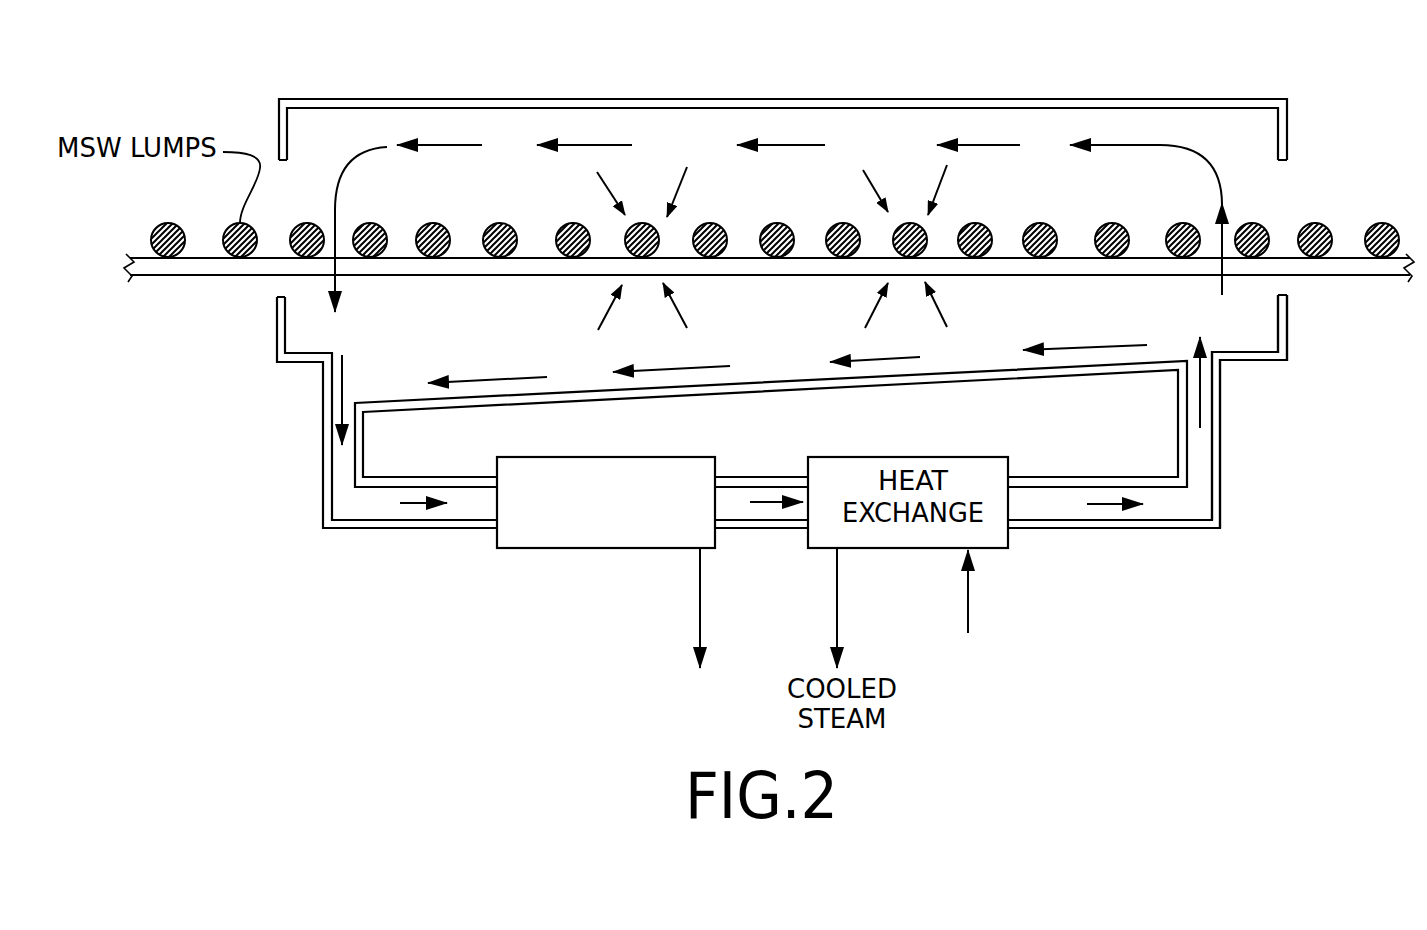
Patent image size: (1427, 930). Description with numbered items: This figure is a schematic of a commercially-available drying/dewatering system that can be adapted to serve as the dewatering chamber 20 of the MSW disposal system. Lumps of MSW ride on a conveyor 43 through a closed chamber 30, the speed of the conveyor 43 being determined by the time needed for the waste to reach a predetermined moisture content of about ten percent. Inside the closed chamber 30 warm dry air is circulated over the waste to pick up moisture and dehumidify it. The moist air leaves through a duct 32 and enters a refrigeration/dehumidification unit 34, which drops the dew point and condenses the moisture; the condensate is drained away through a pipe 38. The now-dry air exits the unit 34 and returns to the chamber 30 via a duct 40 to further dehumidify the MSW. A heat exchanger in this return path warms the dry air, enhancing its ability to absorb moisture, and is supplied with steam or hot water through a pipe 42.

The dewatering chamber 20 is at (312, 573).
The closed chamber 30 is at (397, 99).
The duct 32 is at (340, 513).
The refrigeration/dehumidification unit 34 is at (598, 548).
The pipe 38 is at (703, 620).
The duct 40 is at (1208, 500).
The pipe 42 is at (970, 600).
The conveyor 43 is at (260, 276).